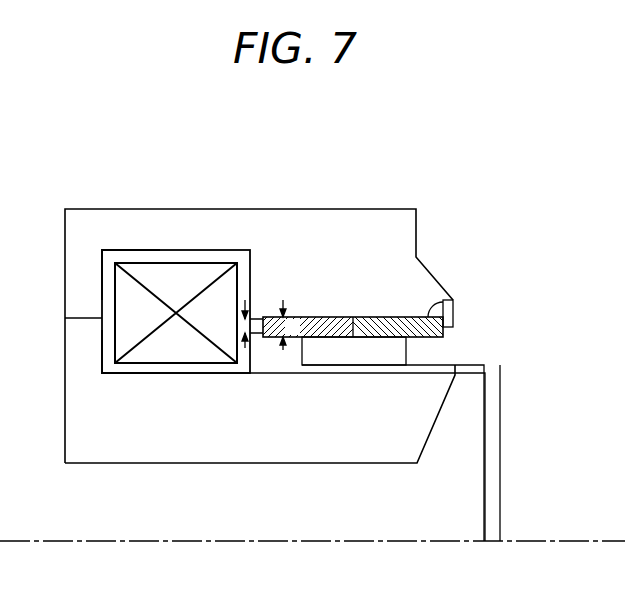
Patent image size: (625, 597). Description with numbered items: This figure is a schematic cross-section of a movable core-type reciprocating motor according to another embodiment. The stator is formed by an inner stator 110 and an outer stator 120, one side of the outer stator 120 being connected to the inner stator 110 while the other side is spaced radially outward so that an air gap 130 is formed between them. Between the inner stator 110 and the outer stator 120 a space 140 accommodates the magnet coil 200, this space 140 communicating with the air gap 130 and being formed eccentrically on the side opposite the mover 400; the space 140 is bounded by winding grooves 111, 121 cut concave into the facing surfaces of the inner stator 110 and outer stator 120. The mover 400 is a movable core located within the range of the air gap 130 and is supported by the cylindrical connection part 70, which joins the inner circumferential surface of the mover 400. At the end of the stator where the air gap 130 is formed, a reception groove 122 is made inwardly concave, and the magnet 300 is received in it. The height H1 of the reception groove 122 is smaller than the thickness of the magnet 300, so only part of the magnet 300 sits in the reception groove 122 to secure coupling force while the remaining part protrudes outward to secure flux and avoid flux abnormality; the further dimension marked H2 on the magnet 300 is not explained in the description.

The connection part 70 is at (501, 468).
The inner stator 110 is at (425, 427).
The winding groove 111 is at (107, 373).
The outer stator 120 is at (412, 228).
The winding groove 121 is at (107, 263).
The reception groove 122 is at (456, 318).
The air gap 130 is at (450, 346).
The space 140 is at (225, 262).
The magnet coil 200 is at (163, 272).
The magnet 300 is at (453, 298).
The mover 400 is at (402, 352).
The height of the reception groove H1 is at (234, 324).
The height H2 is at (290, 325).